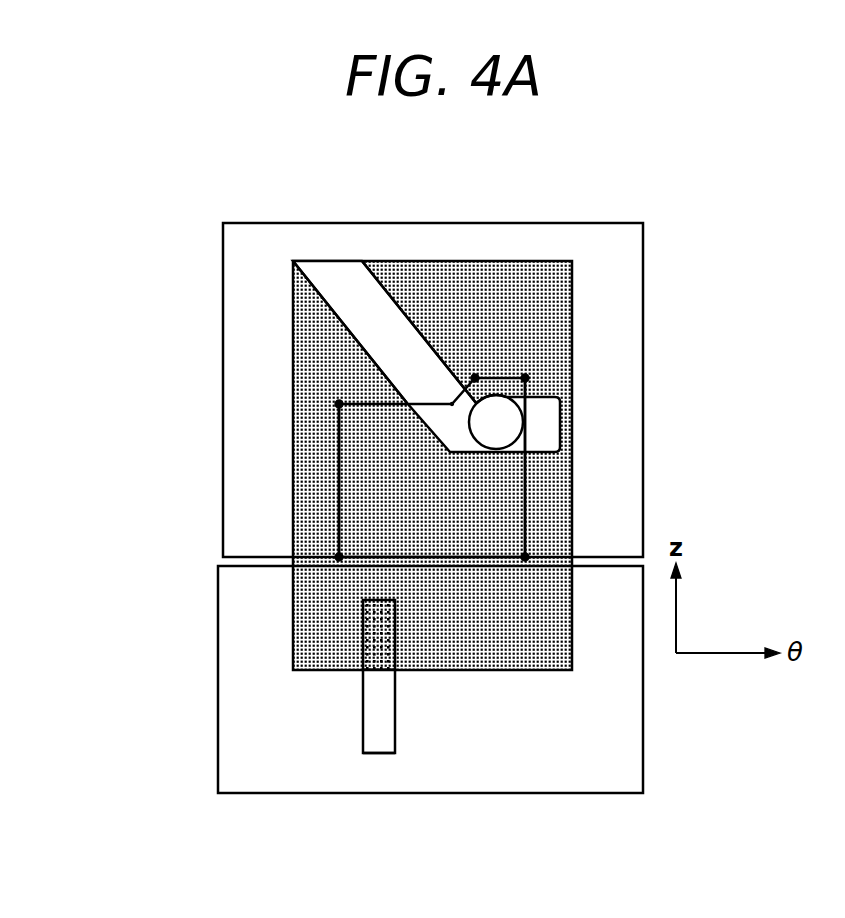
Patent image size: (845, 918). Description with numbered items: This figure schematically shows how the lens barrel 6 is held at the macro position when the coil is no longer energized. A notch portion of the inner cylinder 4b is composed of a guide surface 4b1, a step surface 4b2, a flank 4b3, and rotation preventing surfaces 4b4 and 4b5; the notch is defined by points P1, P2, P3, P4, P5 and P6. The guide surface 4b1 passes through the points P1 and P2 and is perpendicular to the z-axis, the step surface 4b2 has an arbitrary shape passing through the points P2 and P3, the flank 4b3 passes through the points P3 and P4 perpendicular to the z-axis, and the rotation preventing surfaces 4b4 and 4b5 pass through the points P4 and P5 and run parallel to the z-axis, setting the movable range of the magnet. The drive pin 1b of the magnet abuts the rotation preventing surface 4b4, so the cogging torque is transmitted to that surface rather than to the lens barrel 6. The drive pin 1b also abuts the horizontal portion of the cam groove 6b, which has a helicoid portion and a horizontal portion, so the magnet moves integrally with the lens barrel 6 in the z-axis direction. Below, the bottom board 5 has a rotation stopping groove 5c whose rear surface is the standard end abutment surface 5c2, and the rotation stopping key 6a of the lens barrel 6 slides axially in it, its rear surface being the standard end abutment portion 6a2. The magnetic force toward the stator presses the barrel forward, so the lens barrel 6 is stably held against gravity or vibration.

The inner cylinder 4b is at (247, 342).
The guide surface 4b1 is at (377, 400).
The step surface 4b2 is at (457, 388).
The flank 4b3 is at (500, 390).
The rotation preventing surface 4b4 is at (527, 488).
The rotation preventing surface 4b5 is at (340, 493).
The lens barrel 6 is at (293, 428).
The cam groove 6b is at (347, 292).
The rotation stopping key 6a is at (373, 640).
The standard end abutment portion 6a2 is at (373, 673).
The bottom board 5 is at (258, 628).
The rotation stopping groove 5c is at (397, 694).
The standard end abutment surface 5c2 is at (382, 742).
The drive pin 1b is at (513, 423).
The point P1 is at (338, 387).
The point P2 is at (448, 420).
The point P3 is at (469, 360).
The point P4 is at (525, 360).
The point P5 is at (543, 542).
The point P6 is at (321, 541).